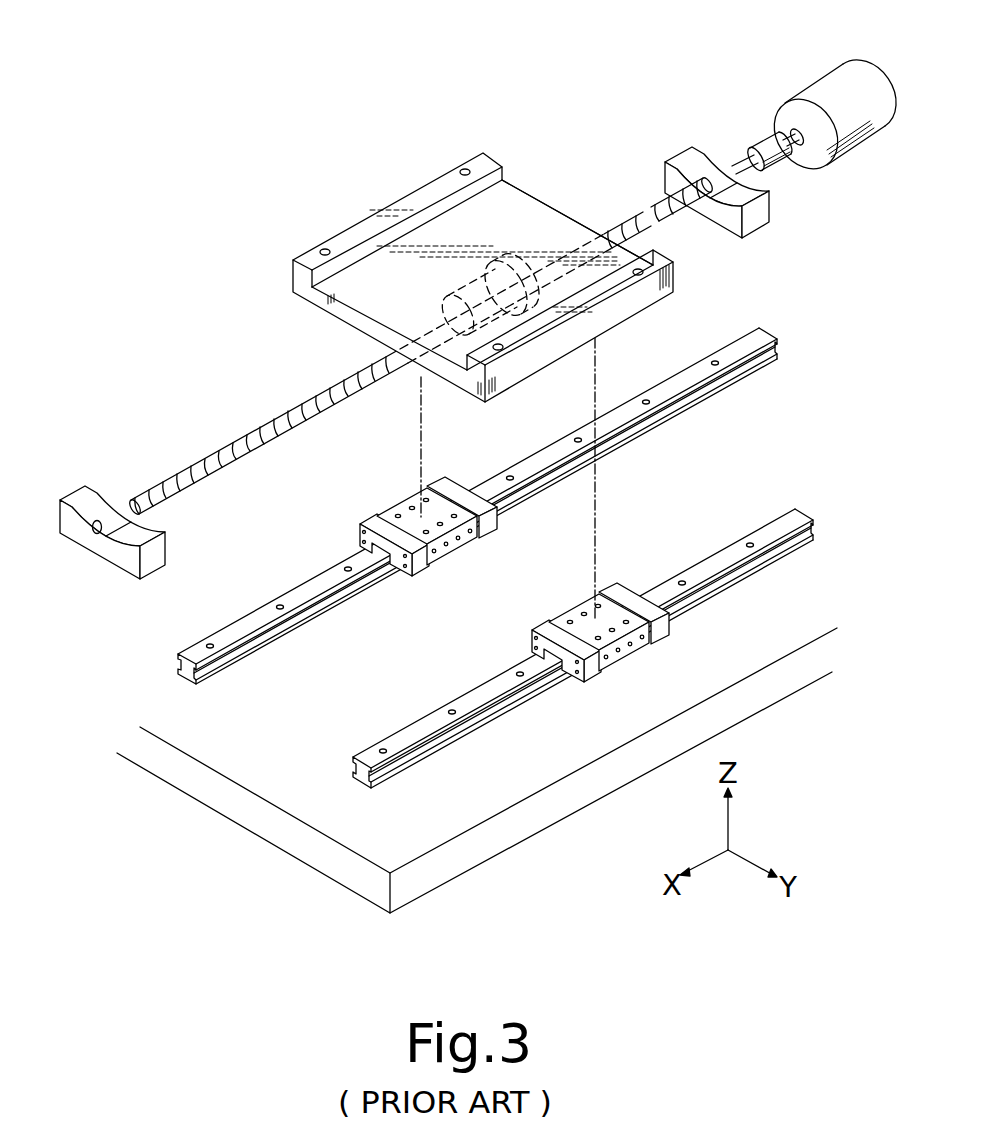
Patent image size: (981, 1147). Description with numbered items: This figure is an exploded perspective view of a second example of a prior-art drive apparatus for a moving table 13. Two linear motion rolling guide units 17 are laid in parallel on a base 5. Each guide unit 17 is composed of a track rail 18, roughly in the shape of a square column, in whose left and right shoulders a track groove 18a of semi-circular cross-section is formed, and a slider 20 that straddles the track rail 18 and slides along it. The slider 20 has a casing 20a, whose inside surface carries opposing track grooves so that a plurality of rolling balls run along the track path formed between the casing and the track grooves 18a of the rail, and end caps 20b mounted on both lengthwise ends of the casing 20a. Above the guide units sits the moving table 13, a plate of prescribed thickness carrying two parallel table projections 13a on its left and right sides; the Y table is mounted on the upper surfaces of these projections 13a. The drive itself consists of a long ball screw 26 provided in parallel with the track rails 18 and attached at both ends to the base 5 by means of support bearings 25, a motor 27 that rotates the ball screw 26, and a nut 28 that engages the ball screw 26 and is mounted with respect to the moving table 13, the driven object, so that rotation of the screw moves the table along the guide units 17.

The base 5 is at (485, 855).
The moving table 13 is at (457, 273).
The table projections 13a is at (338, 243).
The linear motion rolling guide unit 17 is at (468, 583).
The track rail 18 is at (468, 583).
The track groove 18a is at (320, 600).
The slider 20 is at (556, 618).
The casing 20a is at (467, 540).
The end caps 20b is at (483, 532).
The support bearings 25 is at (117, 507).
The ball screw 26 is at (421, 312).
The motor 27 is at (832, 85).
The nut 28 is at (480, 275).